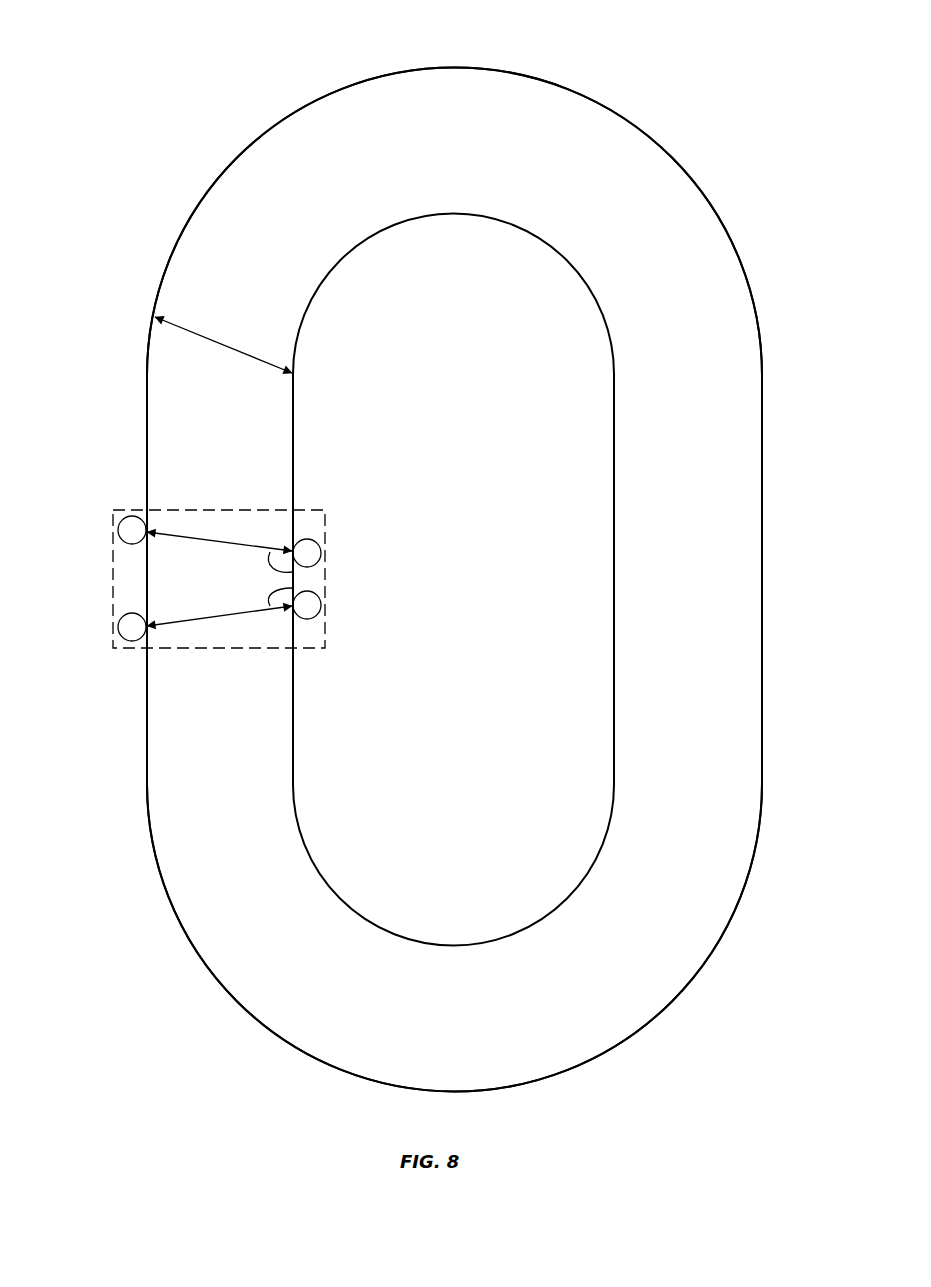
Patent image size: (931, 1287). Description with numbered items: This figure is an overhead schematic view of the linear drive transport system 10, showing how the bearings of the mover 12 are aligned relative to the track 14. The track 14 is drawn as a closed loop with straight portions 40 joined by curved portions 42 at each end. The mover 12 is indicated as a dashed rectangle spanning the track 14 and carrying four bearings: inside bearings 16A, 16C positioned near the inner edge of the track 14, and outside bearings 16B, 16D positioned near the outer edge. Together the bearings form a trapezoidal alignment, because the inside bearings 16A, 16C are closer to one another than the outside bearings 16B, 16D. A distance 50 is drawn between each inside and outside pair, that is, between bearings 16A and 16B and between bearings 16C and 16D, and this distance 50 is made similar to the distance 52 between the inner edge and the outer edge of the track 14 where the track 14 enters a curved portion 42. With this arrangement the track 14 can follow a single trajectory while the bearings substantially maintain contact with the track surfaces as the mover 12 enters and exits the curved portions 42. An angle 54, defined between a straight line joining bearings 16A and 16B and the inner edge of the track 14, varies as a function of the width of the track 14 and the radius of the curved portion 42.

The linear drive transport system 10 is at (243, 46).
The mover 12 is at (115, 578).
The track 14 is at (145, 733).
The inside bearing 16A is at (319, 540).
The outside bearing 16B is at (120, 518).
The inside bearing 16C is at (319, 592).
The outside bearing 16D is at (120, 615).
The straight portion of the track 40 is at (125, 441).
The curved portion of the track 42 is at (409, 66).
The distance between inside and outside bearings 50 is at (203, 536).
The distance between inner and outer edges of the track 52 is at (223, 343).
The angle 54 is at (272, 598).